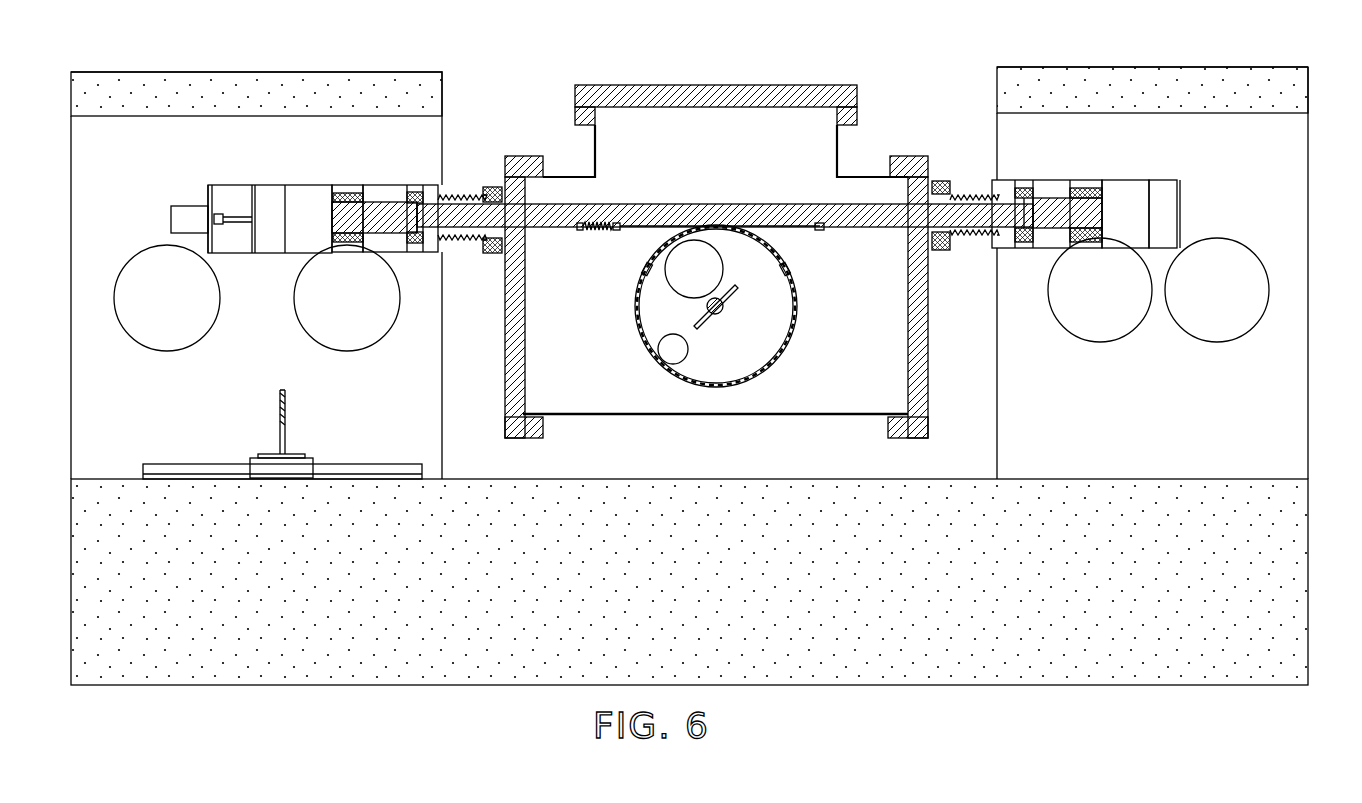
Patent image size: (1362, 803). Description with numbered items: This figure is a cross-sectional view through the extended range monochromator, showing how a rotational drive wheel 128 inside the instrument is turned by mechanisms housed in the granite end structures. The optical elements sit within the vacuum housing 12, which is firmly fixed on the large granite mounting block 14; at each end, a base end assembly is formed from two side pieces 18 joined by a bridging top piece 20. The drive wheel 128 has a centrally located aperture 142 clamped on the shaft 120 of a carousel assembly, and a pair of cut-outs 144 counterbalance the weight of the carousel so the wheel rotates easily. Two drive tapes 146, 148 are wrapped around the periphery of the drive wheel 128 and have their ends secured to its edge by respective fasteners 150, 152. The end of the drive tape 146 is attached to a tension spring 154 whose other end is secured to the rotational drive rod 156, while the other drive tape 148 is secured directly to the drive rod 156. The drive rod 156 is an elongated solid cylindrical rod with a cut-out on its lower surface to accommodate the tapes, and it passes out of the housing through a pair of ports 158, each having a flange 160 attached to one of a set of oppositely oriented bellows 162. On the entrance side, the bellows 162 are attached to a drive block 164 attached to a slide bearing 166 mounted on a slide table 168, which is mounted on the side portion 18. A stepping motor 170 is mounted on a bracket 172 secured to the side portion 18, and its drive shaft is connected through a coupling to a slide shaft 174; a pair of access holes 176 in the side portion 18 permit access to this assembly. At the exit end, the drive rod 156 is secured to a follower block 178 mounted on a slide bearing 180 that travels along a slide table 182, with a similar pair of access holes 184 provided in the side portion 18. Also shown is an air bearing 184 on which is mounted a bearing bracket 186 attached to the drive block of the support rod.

The vacuum housing 12 is at (840, 152).
The mounting block 14 is at (72, 562).
The side pieces 18 is at (72, 176).
The top piece 20 is at (71, 100).
The shaft 120 is at (721, 312).
The rotational drive wheel 128 is at (794, 340).
The aperture 142 is at (726, 299).
The cut-outs 144 is at (680, 282).
The drive tape 146 is at (656, 228).
The drive tape 148 is at (775, 230).
The fastener 150 is at (792, 269).
The fastener 152 is at (640, 268).
The tension spring 154 is at (592, 230).
The rotational drive rod 156 is at (705, 204).
The ports 158 is at (525, 200).
The flange 160 is at (493, 187).
The bellows 162 is at (458, 195).
The drive block 164 is at (412, 185).
The slide bearing 166 is at (345, 185).
The slide table 168 is at (272, 185).
The stepping motor 170 is at (187, 206).
The bracket 172 is at (210, 185).
The slide shaft 174 is at (236, 224).
The access holes 176 is at (214, 320).
The follower block 178 is at (1078, 198).
The slide bearing 180 is at (1126, 180).
The slide table 182 is at (1165, 180).
The access holes 184 is at (1148, 293).
The bearing bracket 186 is at (378, 464).